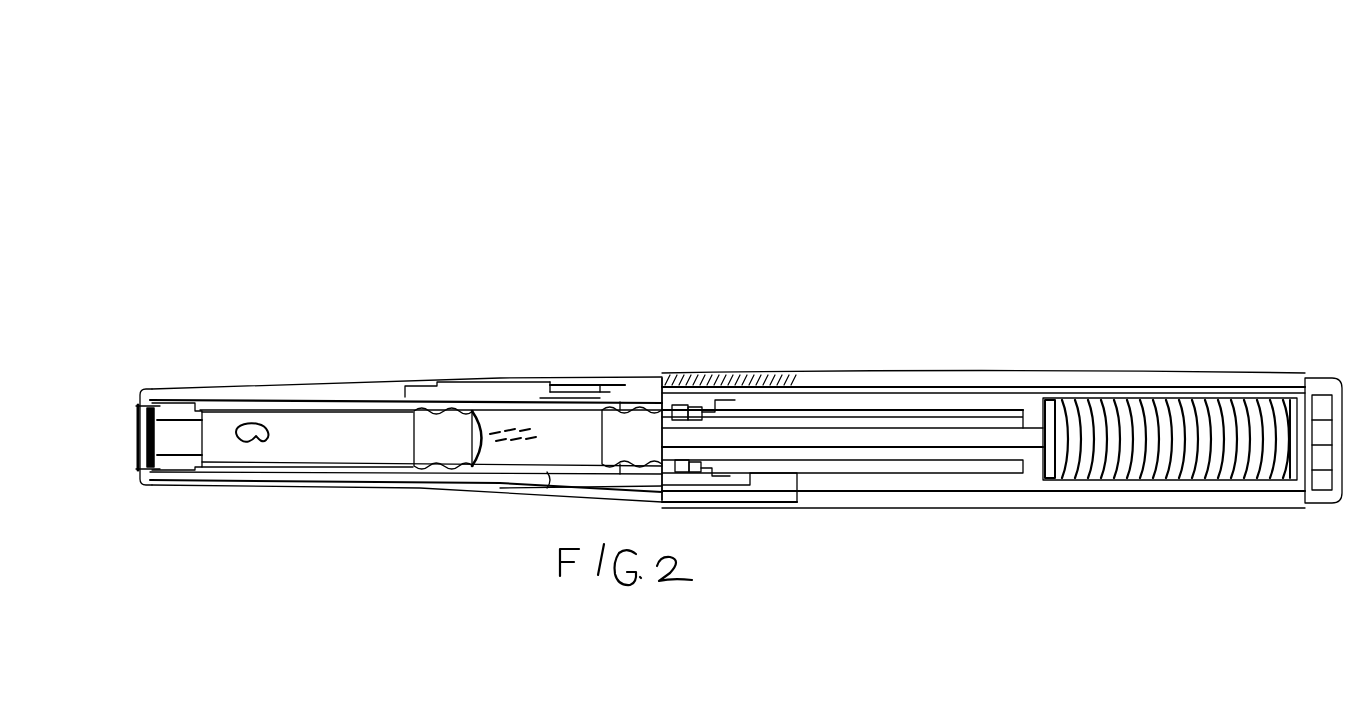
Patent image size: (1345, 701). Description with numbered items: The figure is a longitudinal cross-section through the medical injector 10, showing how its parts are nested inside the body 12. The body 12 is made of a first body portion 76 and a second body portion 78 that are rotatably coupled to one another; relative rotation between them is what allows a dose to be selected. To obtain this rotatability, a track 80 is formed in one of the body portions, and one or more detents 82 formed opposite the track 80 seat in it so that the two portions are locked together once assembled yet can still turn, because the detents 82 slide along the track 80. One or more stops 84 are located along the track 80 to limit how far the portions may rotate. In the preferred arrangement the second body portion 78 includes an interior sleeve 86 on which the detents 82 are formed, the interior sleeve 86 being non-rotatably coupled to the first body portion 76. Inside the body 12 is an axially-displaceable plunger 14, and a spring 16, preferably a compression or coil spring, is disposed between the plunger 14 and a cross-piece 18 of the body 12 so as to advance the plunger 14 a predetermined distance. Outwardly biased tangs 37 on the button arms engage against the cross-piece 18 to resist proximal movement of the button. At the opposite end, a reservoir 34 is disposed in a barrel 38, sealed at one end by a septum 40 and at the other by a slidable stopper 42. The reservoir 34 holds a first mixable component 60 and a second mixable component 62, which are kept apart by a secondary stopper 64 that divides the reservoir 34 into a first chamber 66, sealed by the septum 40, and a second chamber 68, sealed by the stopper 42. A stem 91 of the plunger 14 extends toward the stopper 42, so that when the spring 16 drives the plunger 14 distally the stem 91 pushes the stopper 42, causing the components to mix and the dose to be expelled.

The medical injector 10 is at (822, 120).
The body 12 is at (988, 362).
The plunger 14 is at (892, 455).
The spring 16 is at (1180, 478).
The cross-piece 18 is at (1303, 410).
The reservoir 34 is at (358, 407).
The tangs 37 is at (1293, 476).
The barrel 38 is at (308, 407).
The septum 40 is at (142, 437).
The stopper 42 is at (633, 447).
The first mixable component 60 is at (268, 442).
The second mixable component 62 is at (520, 450).
The secondary stopper 64 is at (447, 453).
The first chamber 66 is at (342, 448).
The second chamber 68 is at (553, 447).
The first body portion 76 is at (453, 382).
The second body portion 78 is at (1083, 371).
The track 80 is at (556, 384).
The detents 82 is at (552, 385).
The stops 84 is at (548, 399).
The interior sleeve 86 is at (790, 480).
The stem 91 is at (823, 420).